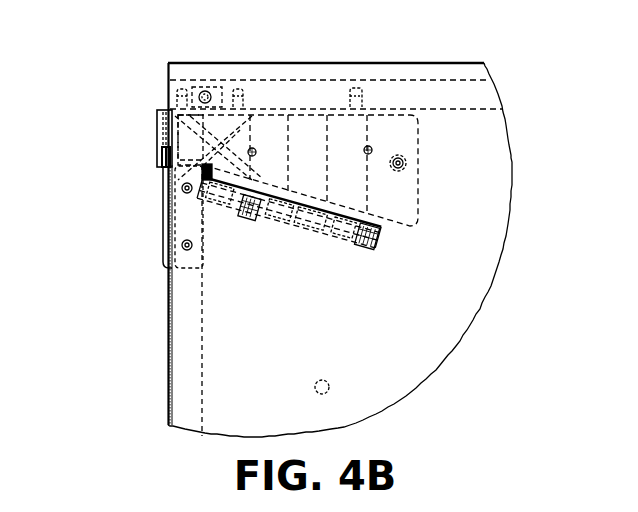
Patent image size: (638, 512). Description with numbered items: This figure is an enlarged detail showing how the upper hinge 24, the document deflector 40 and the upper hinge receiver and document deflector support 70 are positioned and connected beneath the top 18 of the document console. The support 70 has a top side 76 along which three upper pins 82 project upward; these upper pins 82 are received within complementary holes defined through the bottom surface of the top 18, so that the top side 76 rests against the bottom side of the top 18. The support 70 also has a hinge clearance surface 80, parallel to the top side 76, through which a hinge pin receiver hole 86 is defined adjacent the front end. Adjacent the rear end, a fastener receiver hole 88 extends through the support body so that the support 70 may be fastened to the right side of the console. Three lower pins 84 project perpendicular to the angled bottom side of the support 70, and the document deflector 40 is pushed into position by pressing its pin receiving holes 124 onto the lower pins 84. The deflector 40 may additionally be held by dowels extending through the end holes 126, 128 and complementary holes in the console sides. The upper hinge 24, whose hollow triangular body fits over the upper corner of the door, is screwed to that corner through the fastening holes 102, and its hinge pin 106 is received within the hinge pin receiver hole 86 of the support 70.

The top 18 is at (288, 93).
The upper hinge 24 is at (160, 185).
The document deflector 40 is at (380, 240).
The upper hinge receiver and document deflector support 70 is at (400, 191).
The top side 76 is at (320, 107).
The hinge clearance surface 80 is at (158, 167).
The upper pins 82 is at (177, 103).
The lower pins 84 is at (232, 205).
The hinge pin receiver hole 86 is at (166, 157).
The fastener receiver hole 88 is at (402, 160).
The fastening holes 102 is at (182, 190).
The hinge pin 106 is at (163, 147).
The pin receiving holes 124 is at (288, 209).
The end hole 126 is at (367, 236).
The end hole 128 is at (249, 208).